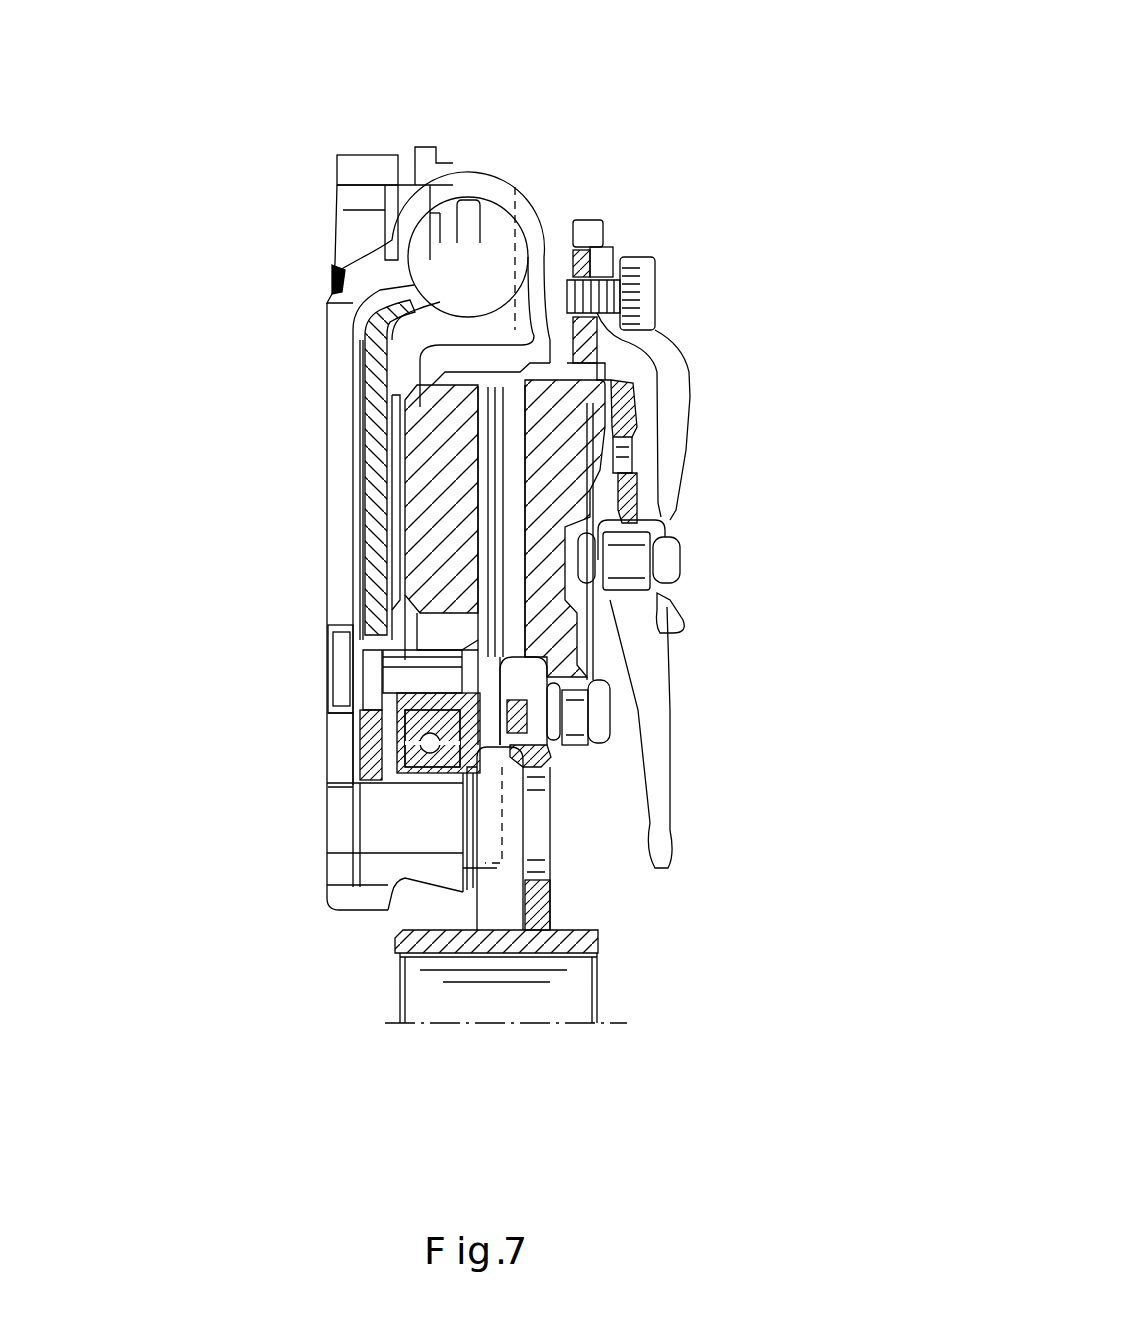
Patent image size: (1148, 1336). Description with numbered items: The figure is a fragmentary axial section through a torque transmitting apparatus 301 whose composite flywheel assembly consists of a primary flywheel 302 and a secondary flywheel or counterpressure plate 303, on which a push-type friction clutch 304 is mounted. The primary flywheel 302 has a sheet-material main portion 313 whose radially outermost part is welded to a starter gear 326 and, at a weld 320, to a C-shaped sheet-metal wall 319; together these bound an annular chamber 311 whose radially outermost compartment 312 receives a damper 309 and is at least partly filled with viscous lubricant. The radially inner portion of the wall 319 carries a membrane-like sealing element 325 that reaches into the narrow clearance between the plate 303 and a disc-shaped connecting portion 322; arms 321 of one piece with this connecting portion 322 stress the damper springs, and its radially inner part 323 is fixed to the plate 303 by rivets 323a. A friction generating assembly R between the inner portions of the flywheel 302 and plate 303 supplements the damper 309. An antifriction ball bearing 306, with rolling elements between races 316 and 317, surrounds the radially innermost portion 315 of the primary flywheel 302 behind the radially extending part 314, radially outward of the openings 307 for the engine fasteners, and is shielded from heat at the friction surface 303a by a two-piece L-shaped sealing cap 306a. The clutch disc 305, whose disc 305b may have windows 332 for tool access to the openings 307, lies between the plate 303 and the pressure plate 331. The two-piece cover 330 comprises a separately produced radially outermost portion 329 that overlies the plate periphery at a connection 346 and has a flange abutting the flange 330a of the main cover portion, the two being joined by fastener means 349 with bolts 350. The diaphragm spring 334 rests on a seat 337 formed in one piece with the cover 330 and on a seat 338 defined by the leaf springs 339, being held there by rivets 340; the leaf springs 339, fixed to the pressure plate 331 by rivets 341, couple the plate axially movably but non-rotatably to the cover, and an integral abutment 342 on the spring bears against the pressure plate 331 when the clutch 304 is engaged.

The torque transmitting apparatus 301 is at (288, 98).
The primary flywheel 302 is at (340, 750).
The counterpressure plate 303 is at (420, 533).
The friction surface 303a is at (360, 465).
The friction clutch 304 is at (670, 352).
The clutch disc 305 is at (552, 757).
The disc 305b is at (540, 888).
The antifriction bearing 306 is at (472, 768).
The sealing cap 306a is at (542, 760).
The openings 307 is at (417, 777).
The damper 309 is at (469, 188).
The annular chamber 311 is at (357, 302).
The compartment 312 is at (385, 218).
The main portion 313 is at (325, 552).
The radially extending part 314 is at (337, 727).
The radially innermost portion 315 is at (430, 866).
The race 316 is at (408, 837).
The race 317 is at (373, 780).
The wall 319 is at (517, 187).
The weld 320 is at (432, 155).
The arms 321 is at (430, 238).
The connecting portion 322 is at (360, 427).
The radially inner part 323 is at (340, 640).
The rivets 323a is at (340, 688).
The sealing element 325 is at (360, 502).
The starter gear 326 is at (362, 172).
The radially outermost portion 329 is at (477, 363).
The cover 330 is at (632, 397).
The flange 330a is at (602, 238).
The pressure plate 331 is at (628, 433).
The windows 332 is at (533, 860).
The diaphragm spring 334 is at (668, 470).
The seat 337 is at (648, 518).
The seat 338 is at (597, 527).
The leaf springs 339 is at (603, 613).
The rivets 340 is at (640, 558).
The rivets 341 is at (575, 720).
The abutment 342 is at (663, 363).
The connection 346 is at (363, 373).
The fastener means 349 is at (644, 232).
The bolts 350 is at (653, 268).
The friction generating assembly R is at (329, 775).